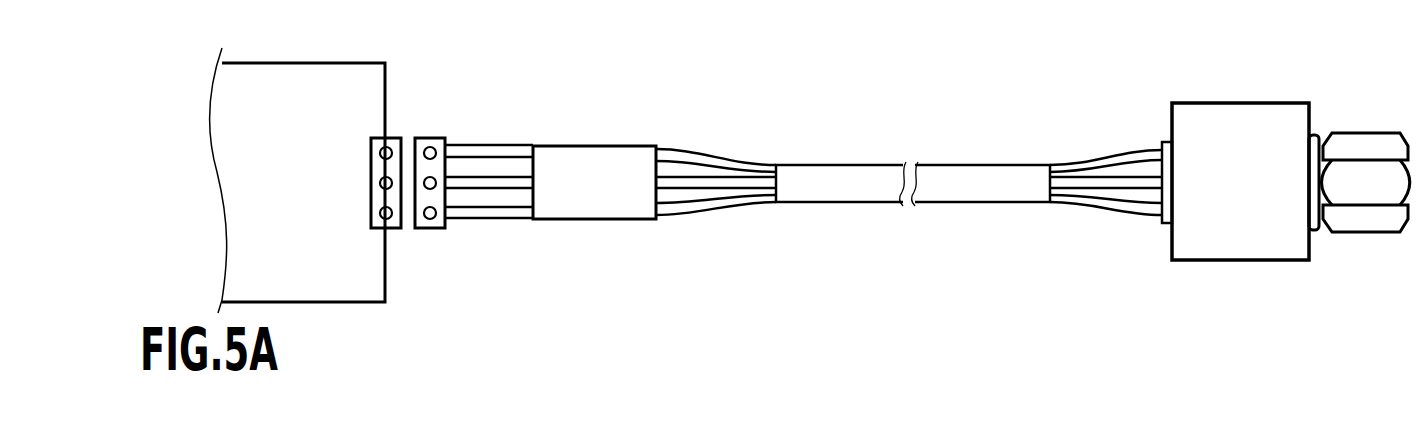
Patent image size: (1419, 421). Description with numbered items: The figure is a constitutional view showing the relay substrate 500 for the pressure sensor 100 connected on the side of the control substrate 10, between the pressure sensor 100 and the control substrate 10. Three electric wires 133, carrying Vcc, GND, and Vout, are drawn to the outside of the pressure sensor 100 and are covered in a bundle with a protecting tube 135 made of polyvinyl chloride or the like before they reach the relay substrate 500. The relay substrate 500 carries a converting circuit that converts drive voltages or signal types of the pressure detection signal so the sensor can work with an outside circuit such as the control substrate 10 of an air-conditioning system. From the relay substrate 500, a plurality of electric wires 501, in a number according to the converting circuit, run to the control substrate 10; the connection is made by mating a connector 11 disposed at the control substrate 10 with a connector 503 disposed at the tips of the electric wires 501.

The control substrate 10 is at (298, 66).
The connector 11 is at (397, 138).
The connector 503 is at (438, 138).
The electric wires 501 is at (521, 216).
The relay substrate 500 is at (598, 148).
The protecting tube 135 is at (975, 168).
The electric wires 133 is at (1115, 198).
The pressure sensor 100 is at (1240, 108).